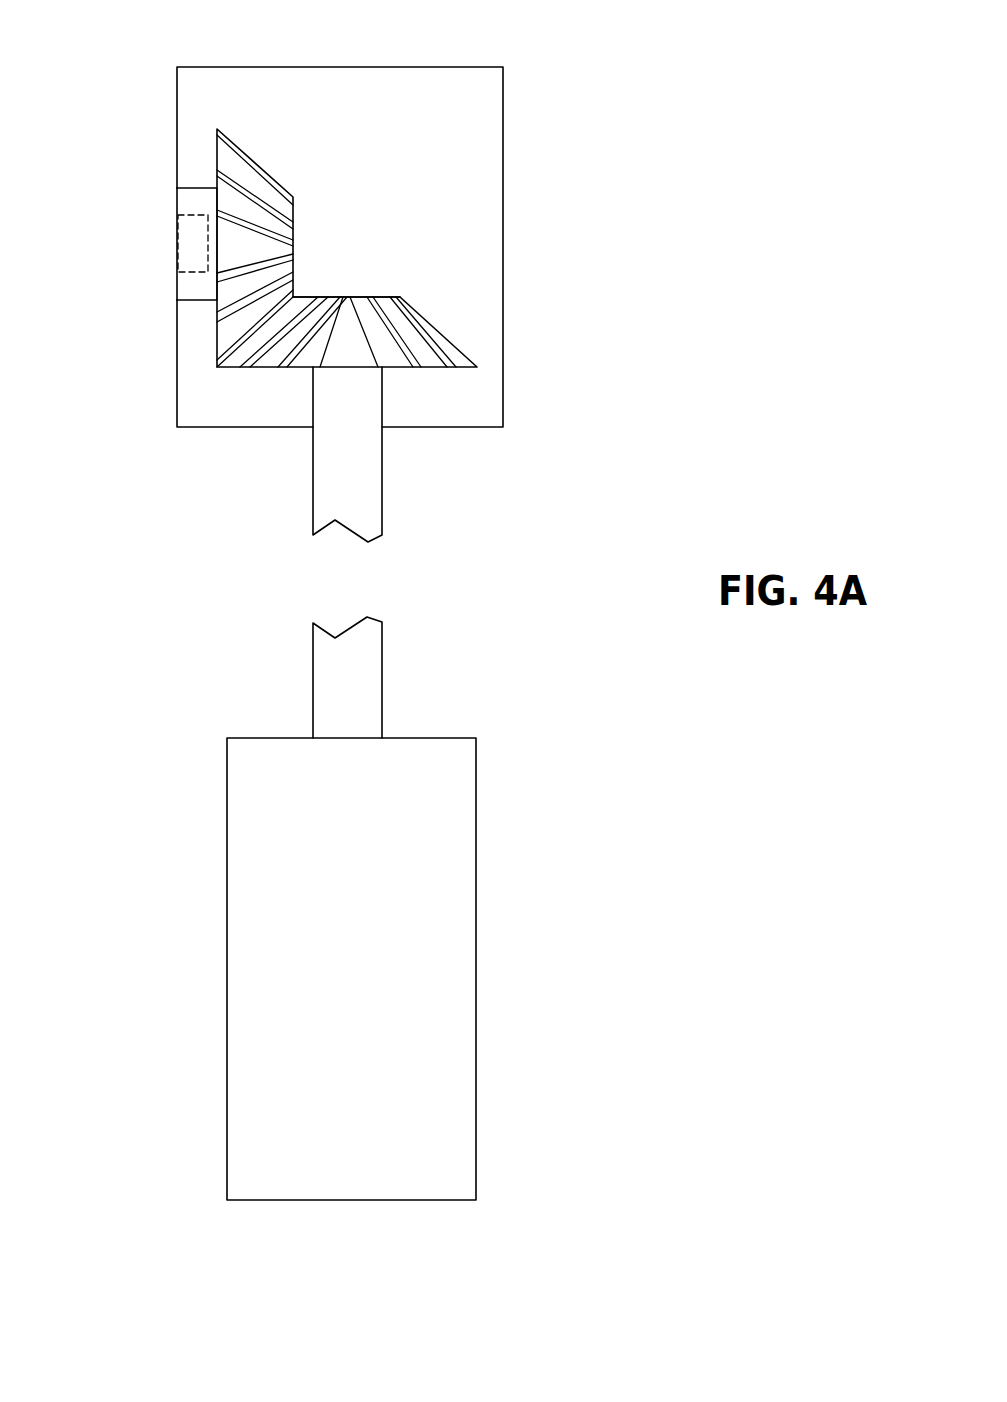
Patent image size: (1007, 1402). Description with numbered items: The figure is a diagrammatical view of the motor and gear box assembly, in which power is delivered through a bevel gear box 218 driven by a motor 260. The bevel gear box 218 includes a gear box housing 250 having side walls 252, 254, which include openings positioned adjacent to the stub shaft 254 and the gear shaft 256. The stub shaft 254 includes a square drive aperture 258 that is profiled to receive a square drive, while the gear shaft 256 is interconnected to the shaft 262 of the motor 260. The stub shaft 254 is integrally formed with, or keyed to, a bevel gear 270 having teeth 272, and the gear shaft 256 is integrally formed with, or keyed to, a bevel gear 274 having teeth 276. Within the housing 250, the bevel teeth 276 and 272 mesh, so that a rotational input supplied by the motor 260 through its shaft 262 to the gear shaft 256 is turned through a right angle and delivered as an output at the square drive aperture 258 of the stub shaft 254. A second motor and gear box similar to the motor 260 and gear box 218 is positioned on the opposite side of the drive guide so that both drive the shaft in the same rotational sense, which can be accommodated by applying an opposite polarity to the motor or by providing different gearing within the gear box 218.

The bevel gear box 218 is at (752, 193).
The gear box housing 250 is at (448, 67).
The side wall 252 is at (177, 143).
The stub shaft 254 is at (198, 302).
The gear shaft 256 is at (340, 472).
The square drive aperture 258 is at (193, 217).
The motor 260 is at (457, 970).
The motor shaft 262 is at (365, 682).
The bevel gear 270 is at (277, 207).
The teeth 272 is at (293, 247).
The bevel gear 274 is at (377, 297).
The teeth 276 is at (433, 330).